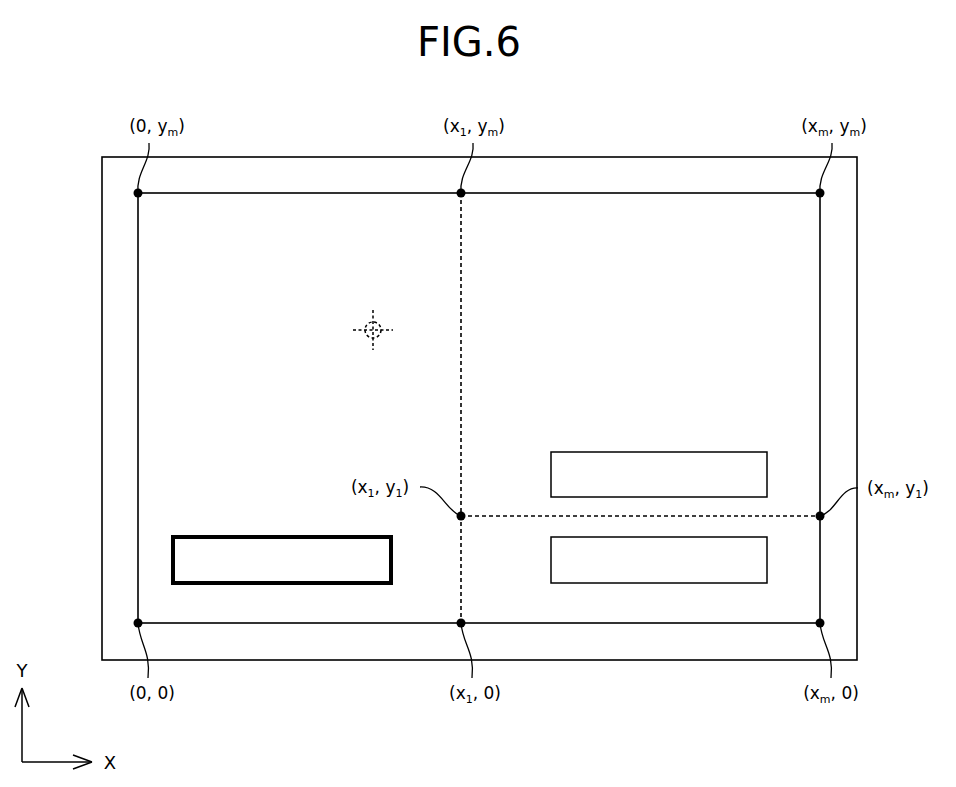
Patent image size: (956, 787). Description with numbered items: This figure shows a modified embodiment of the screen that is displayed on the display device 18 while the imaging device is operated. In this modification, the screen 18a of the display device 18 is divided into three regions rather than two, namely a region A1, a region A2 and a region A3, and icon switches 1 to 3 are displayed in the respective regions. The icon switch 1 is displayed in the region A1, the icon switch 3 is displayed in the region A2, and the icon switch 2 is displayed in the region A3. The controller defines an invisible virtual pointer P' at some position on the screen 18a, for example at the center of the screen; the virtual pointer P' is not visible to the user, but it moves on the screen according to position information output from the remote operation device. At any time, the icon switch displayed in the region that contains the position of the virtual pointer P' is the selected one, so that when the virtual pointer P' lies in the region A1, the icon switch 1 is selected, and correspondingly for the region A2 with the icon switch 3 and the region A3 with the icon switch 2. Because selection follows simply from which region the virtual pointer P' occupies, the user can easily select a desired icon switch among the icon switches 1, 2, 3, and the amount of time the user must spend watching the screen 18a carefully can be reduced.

The icon switch 1 is at (262, 535).
The icon switch 2 is at (551, 555).
The icon switch 3 is at (551, 465).
The display device 18 is at (726, 155).
The screen 18a is at (603, 193).
The region A1 is at (145, 472).
The region A2 is at (803, 383).
The region A3 is at (803, 573).
The virtual pointer P' is at (383, 311).